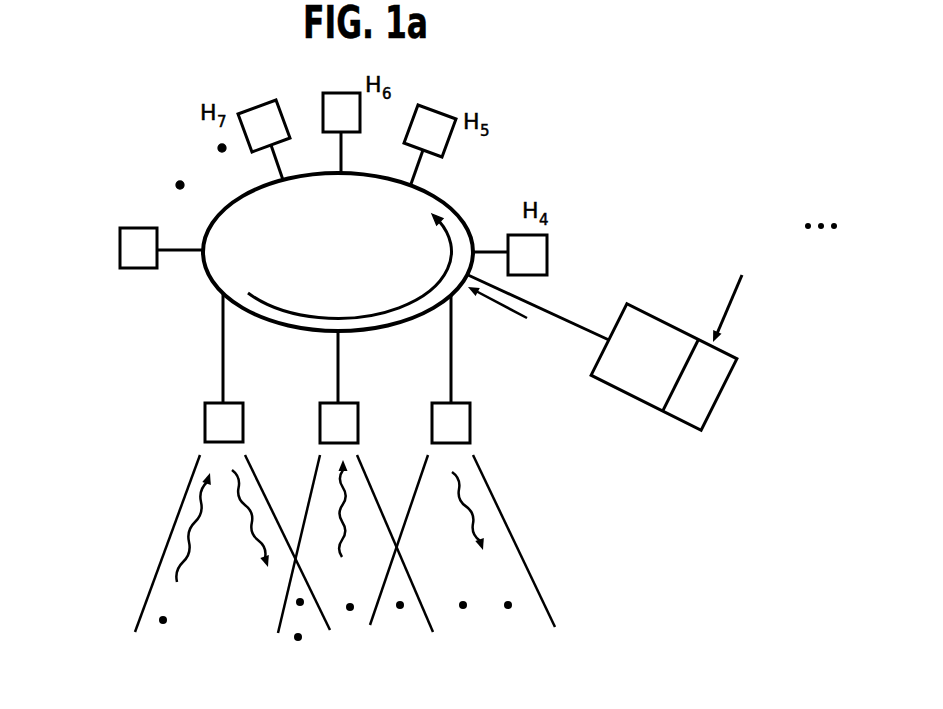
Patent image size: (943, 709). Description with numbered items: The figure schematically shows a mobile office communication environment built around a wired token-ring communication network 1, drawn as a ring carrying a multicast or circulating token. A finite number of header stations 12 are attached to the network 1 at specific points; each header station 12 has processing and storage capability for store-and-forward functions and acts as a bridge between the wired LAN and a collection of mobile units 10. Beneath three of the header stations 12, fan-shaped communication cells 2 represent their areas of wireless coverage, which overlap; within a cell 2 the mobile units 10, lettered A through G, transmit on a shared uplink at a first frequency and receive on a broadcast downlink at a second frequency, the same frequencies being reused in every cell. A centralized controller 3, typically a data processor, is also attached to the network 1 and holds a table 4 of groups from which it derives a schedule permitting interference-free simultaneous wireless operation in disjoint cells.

The token-ring communication network 1 is at (232, 203).
The communication cell 2 is at (181, 507).
The centralized controller 3 is at (653, 318).
The table 4 is at (713, 407).
The mobile communication unit 10 is at (166, 622).
The header station 12 is at (120, 229).